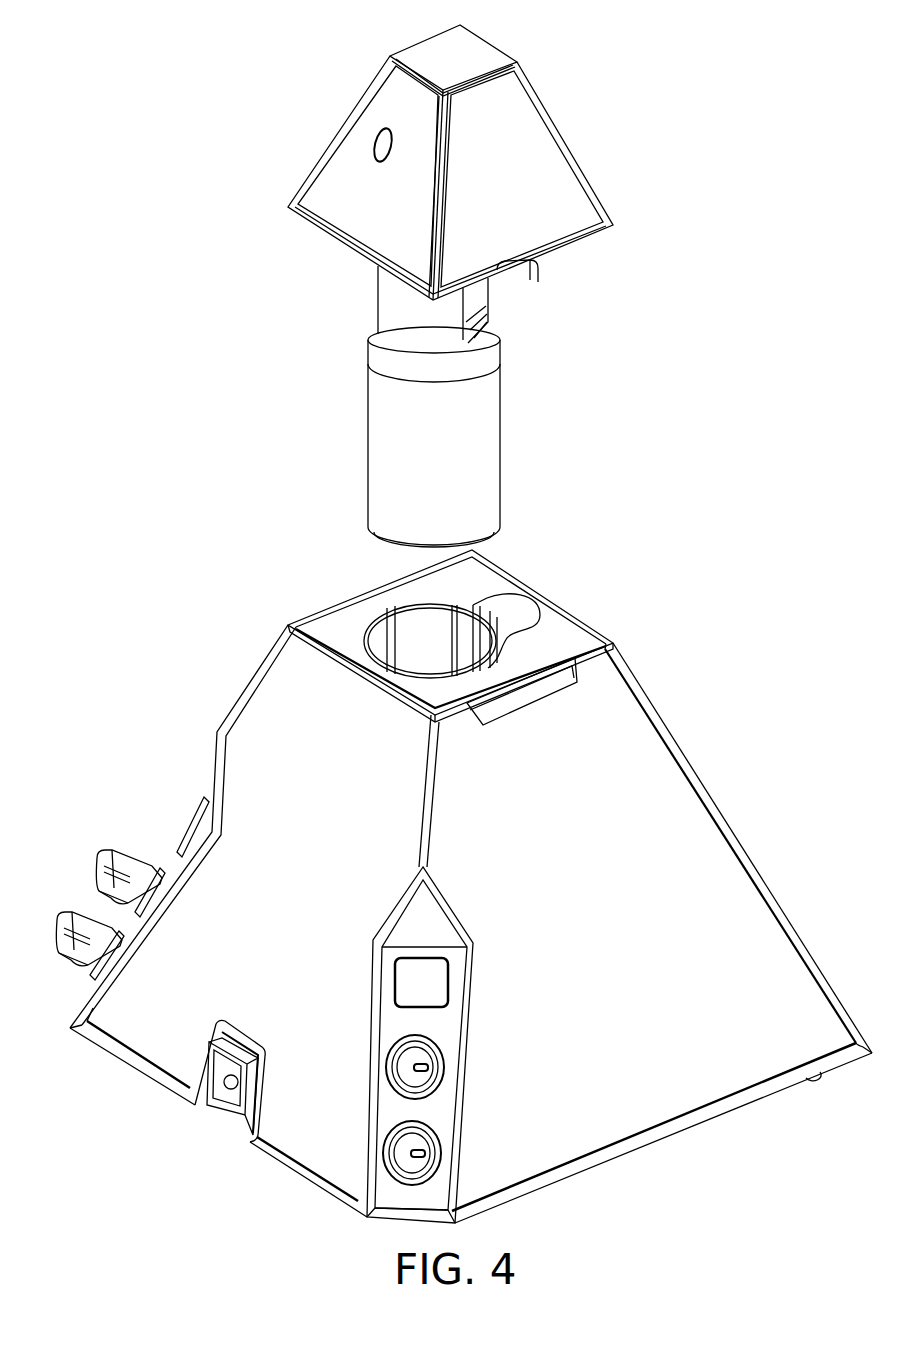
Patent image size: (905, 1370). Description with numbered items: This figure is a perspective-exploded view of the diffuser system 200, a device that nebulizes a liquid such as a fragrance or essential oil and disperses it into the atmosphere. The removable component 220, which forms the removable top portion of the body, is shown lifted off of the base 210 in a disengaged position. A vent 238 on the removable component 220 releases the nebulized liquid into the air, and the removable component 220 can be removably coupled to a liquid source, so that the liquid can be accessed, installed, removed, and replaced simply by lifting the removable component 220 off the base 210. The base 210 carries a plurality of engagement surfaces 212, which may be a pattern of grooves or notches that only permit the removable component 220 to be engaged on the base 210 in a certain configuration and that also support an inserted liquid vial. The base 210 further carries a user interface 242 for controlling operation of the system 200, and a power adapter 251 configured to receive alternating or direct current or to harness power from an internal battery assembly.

The diffuser system 200 is at (160, 86).
The removable component 220 is at (625, 26).
The vent 238 is at (371, 128).
The base 210 is at (623, 897).
The engagement surfaces 212 is at (440, 607).
The user interface 242 is at (74, 857).
The power adapter 251 is at (216, 1124).